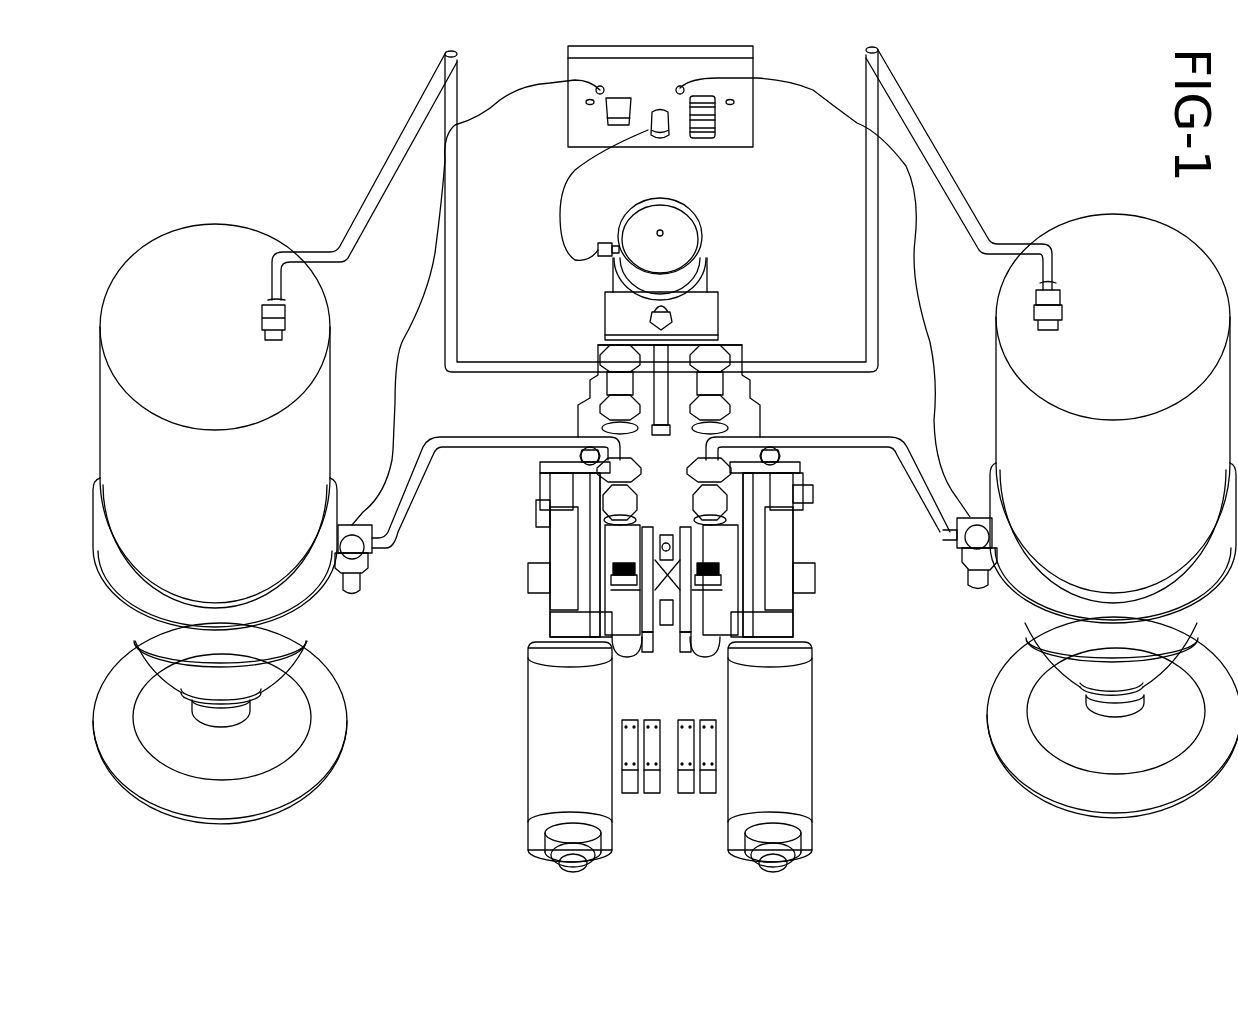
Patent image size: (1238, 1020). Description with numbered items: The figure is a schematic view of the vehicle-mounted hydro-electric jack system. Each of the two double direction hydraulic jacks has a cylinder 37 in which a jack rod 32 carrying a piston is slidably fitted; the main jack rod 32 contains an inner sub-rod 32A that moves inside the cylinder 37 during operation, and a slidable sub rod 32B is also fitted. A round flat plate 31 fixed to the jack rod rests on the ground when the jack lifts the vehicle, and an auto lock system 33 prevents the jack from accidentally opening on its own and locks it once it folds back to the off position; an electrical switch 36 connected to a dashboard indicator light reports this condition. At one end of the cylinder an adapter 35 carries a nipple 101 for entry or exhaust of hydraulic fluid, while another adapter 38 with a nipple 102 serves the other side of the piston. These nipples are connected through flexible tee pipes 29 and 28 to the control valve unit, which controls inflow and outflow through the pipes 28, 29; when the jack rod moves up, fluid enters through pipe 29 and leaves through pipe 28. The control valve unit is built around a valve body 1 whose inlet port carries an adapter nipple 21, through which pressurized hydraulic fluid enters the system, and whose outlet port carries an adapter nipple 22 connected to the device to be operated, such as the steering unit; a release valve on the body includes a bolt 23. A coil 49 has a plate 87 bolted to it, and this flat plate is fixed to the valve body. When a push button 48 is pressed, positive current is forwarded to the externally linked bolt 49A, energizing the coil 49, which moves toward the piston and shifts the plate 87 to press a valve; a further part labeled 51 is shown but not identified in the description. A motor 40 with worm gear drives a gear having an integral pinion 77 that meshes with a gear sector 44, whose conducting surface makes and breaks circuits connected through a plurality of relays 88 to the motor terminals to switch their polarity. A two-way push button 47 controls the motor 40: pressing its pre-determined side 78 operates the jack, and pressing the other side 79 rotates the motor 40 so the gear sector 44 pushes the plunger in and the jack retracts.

The valve body 1 is at (762, 417).
The adapter nipple 21 is at (815, 490).
The adapter nipple 22 is at (537, 513).
The bolt 23 is at (540, 472).
The flexible tee pipe 28 is at (887, 435).
The flexible tee pipe 29 is at (833, 360).
The round flat plate 31 is at (990, 713).
The jack rod 32 is at (1100, 718).
The sub-rod 32A is at (1073, 683).
The slidable sub rod 32B is at (1027, 625).
The auto lock system 33 is at (1023, 675).
The adapter 35 is at (980, 516).
The electrical switch 36 is at (962, 558).
The cylinder 37 is at (1113, 418).
The adapter 38 is at (1065, 327).
The motor 40 is at (532, 855).
The gear sector 44 is at (712, 560).
The two-way push button 47 is at (713, 125).
The push button 48 is at (662, 140).
The coil 49 is at (700, 242).
The externally linked bolt 49A is at (598, 252).
The gauge needle pivot 51 is at (657, 231).
The pinion 77 is at (733, 575).
The pre-determined side 78 is at (707, 137).
The other side 79 is at (716, 113).
The plate 87 is at (712, 300).
The relays 88 is at (680, 788).
The nipple 101 is at (957, 542).
The nipple 102 is at (1037, 297).